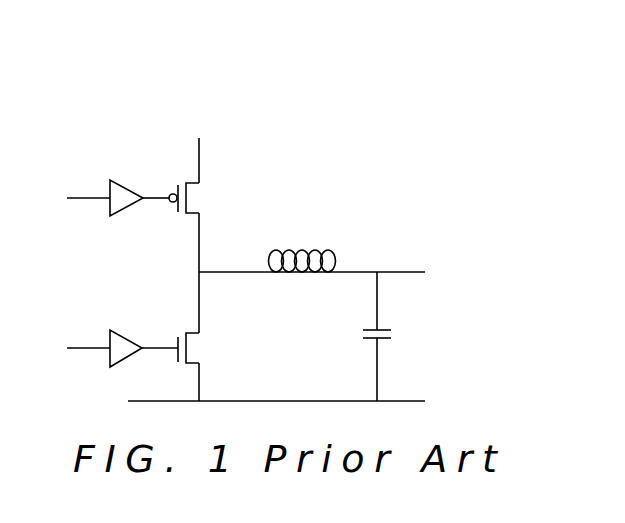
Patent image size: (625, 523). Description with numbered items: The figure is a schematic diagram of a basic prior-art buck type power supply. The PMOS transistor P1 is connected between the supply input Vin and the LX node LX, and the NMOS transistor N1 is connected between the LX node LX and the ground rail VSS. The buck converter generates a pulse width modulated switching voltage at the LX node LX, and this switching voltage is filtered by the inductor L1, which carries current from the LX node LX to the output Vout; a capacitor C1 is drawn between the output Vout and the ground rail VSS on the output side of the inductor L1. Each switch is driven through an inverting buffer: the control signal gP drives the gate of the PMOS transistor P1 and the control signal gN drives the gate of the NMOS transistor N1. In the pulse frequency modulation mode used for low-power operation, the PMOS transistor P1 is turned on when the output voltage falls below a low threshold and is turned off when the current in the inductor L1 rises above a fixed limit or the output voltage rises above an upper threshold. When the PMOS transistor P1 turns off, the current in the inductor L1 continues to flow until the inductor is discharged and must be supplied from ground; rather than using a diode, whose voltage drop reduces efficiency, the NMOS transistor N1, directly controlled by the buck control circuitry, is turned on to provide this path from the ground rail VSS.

The PMOS transistor P1 is at (191, 227).
The NMOS transistor N1 is at (196, 336).
The inductor L1 is at (302, 250).
The capacitor C1 is at (388, 336).
The input voltage terminal Vin is at (200, 151).
The output voltage terminal Vout is at (403, 274).
The ground terminal VSS is at (297, 402).
The LX node LX is at (233, 262).
The PMOS gate control signal gP is at (106, 198).
The NMOS gate control signal gN is at (110, 348).